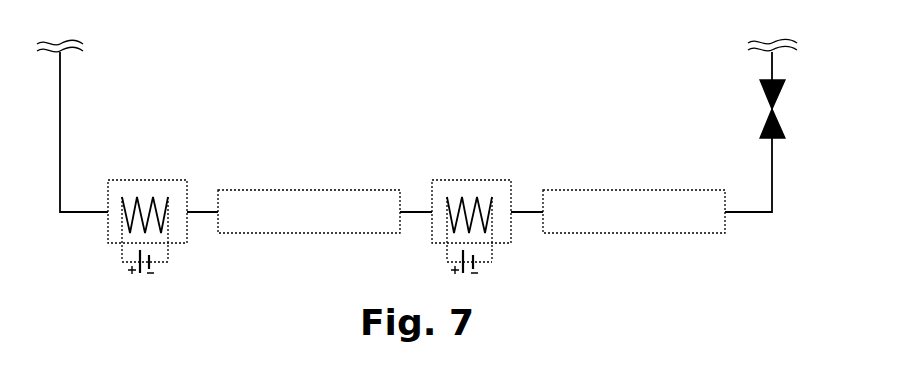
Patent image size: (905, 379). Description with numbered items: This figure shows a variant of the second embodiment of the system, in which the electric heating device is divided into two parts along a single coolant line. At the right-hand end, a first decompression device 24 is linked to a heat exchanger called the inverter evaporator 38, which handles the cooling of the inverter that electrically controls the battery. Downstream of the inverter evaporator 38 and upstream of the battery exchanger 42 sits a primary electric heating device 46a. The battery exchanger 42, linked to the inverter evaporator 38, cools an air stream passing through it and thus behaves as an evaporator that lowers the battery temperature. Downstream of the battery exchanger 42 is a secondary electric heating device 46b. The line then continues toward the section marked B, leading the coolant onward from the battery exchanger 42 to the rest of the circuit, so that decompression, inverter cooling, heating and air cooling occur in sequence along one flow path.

The fluid line section B is at (61, 117).
The secondary electric heating device 46b is at (158, 180).
The battery exchanger 42 is at (336, 203).
The primary electric heating device 46a is at (470, 180).
The inverter evaporator 38 is at (590, 215).
The first decompression device 24 is at (764, 100).